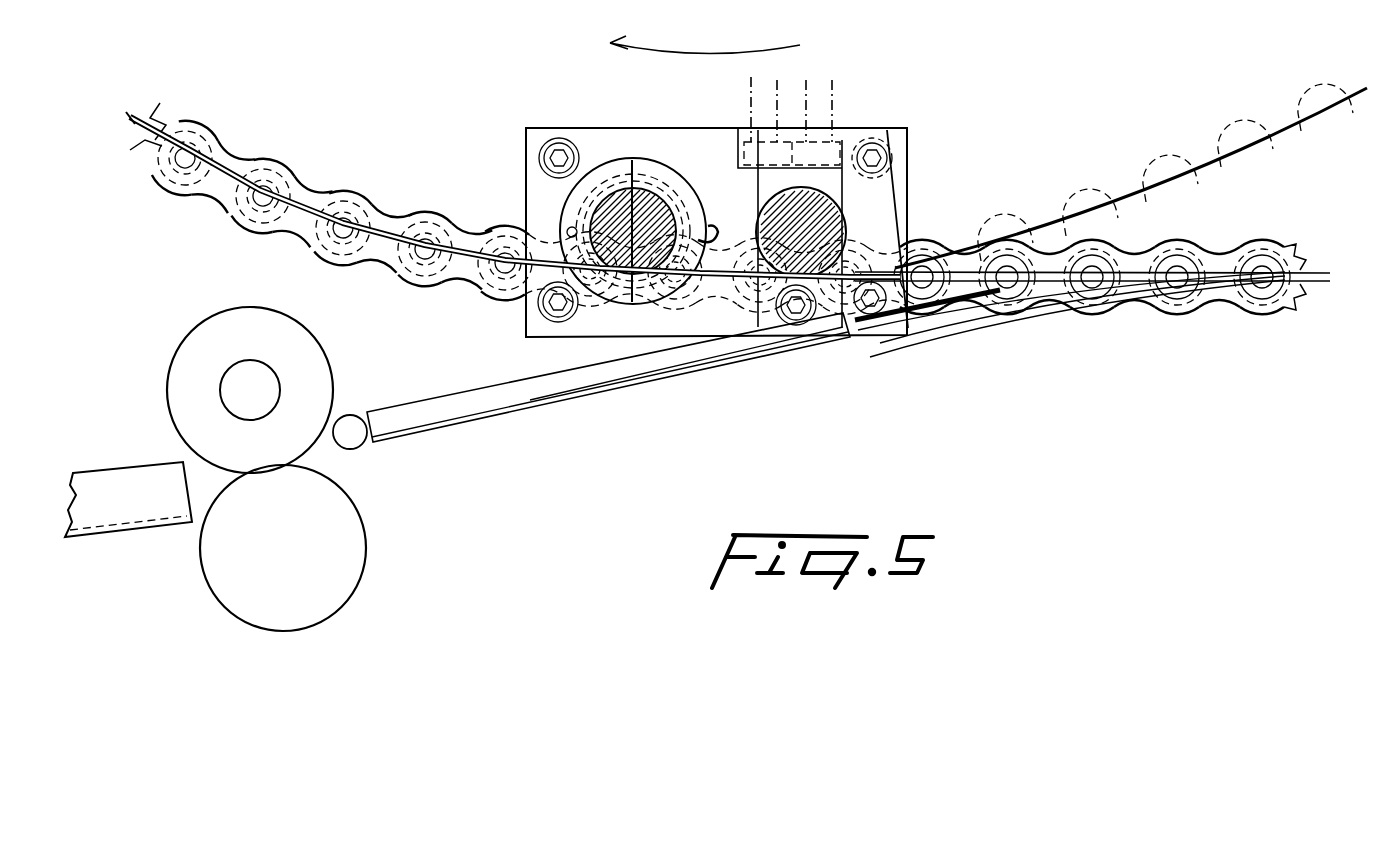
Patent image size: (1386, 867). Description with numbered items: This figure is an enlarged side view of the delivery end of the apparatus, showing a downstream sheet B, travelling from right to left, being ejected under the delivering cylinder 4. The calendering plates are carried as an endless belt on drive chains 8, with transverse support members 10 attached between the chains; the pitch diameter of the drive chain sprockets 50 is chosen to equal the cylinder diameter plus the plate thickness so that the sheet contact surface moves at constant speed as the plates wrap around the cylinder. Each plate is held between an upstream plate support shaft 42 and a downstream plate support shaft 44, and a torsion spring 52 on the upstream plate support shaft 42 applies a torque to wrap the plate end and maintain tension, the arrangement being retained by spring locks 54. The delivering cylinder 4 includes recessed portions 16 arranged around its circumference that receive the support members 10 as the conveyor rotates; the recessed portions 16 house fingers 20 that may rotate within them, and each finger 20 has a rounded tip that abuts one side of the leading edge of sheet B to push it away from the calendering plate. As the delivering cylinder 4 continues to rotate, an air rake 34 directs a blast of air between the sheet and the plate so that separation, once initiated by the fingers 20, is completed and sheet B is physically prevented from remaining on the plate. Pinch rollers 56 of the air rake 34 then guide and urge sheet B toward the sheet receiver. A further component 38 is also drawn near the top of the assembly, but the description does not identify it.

The delivering cylinder 4 is at (1126, 93).
The drive chains 8 is at (238, 150).
The support members 10 is at (587, 140).
The recessed portions 16 is at (907, 128).
The fingers 20 is at (883, 213).
The air rake 34 is at (530, 400).
The pins 38 is at (832, 98).
The upstream plate support shaft 42 is at (607, 220).
The downstream plate support shaft 44 is at (847, 202).
The drive chain sprockets 50 is at (1247, 117).
The torsion spring 52 is at (712, 230).
The spring locks 54 is at (647, 293).
The pinch rollers 56 is at (172, 385).
The downstream sheet B is at (1053, 310).